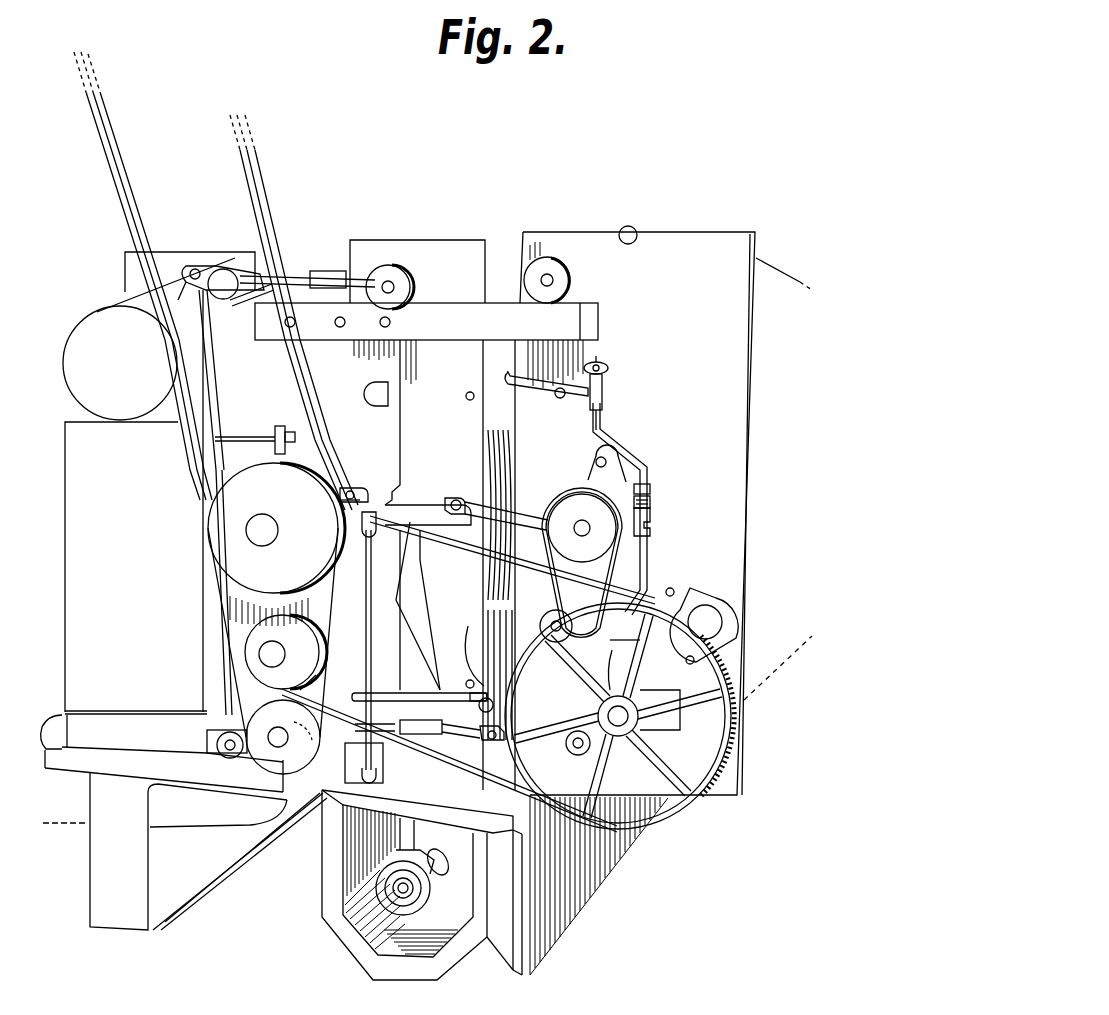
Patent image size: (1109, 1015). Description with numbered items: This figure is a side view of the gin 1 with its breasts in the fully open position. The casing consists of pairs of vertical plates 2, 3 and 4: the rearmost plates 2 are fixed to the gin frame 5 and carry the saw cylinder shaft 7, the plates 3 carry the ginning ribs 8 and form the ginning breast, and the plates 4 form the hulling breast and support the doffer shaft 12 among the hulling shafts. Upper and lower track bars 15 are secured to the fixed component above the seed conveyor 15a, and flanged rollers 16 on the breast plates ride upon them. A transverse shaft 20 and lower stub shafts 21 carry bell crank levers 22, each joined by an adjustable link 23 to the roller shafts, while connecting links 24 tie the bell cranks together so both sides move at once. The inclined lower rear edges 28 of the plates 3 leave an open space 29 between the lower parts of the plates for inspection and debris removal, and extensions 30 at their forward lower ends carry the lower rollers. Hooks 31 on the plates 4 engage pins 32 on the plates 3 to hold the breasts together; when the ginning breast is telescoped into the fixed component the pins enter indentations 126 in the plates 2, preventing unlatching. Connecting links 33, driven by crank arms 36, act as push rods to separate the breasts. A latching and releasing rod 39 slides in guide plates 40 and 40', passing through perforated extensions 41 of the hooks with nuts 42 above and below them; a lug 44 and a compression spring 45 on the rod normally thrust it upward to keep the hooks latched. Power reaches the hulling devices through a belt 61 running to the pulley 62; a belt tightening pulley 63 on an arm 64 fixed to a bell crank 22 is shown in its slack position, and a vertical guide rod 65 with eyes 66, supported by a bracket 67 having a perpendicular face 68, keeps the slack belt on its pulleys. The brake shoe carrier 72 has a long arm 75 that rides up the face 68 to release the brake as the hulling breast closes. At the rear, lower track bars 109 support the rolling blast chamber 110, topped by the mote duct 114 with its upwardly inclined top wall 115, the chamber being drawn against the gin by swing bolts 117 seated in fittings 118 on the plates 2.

The gin 1 is at (522, 226).
The plates 2 is at (390, 372).
The plates 3 is at (452, 250).
The plates 4 is at (706, 248).
The gin frame 5 is at (138, 888).
The saw cylinder shaft 7 is at (280, 526).
The ginning ribs 8 is at (492, 468).
The shaft of the doffer 12 is at (718, 594).
The track bars 15 is at (500, 318).
The seed conveyor 15a is at (340, 870).
The flanged rollers 16 is at (408, 276).
The shaft 20 is at (224, 280).
The stub shafts 21 is at (274, 752).
The bell crank levers 22 is at (250, 296).
The adjustable link 23 is at (322, 271).
The connecting links 24 is at (228, 607).
The lower rear edges 28 is at (444, 680).
The open space 29 is at (418, 666).
The extensions 30 is at (524, 706).
The hooks 31 is at (545, 390).
The pins 32 is at (470, 396).
The connecting links 33 is at (530, 512).
The crank arm 36 is at (584, 476).
The latching and releasing rod 39 is at (648, 558).
The guide plate 40 is at (660, 518).
The guide plate 40' is at (619, 350).
The flat perforated extensions 41 is at (604, 396).
The nuts 42 is at (606, 372).
The lugs 44 is at (650, 486).
The compression spring 45 is at (652, 500).
The belt 61 is at (456, 556).
The pulley 62 is at (666, 818).
The belt tightening pulley 63 is at (316, 652).
The arm 64 is at (322, 702).
The vertical guide rod 65 is at (364, 594).
The eyes 66 is at (378, 518).
The bracket 67 is at (382, 614).
The face 68 is at (404, 626).
The brake shoe carrier 72 is at (662, 724).
The long arm 75 is at (622, 648).
The lower track bars 109 is at (120, 770).
The blast chamber 110 is at (74, 454).
The mote duct 114 is at (98, 332).
The top wall 115 is at (174, 292).
The swing bolts 117 is at (240, 436).
The fittings 118 is at (279, 428).
The indentations 126 is at (376, 392).